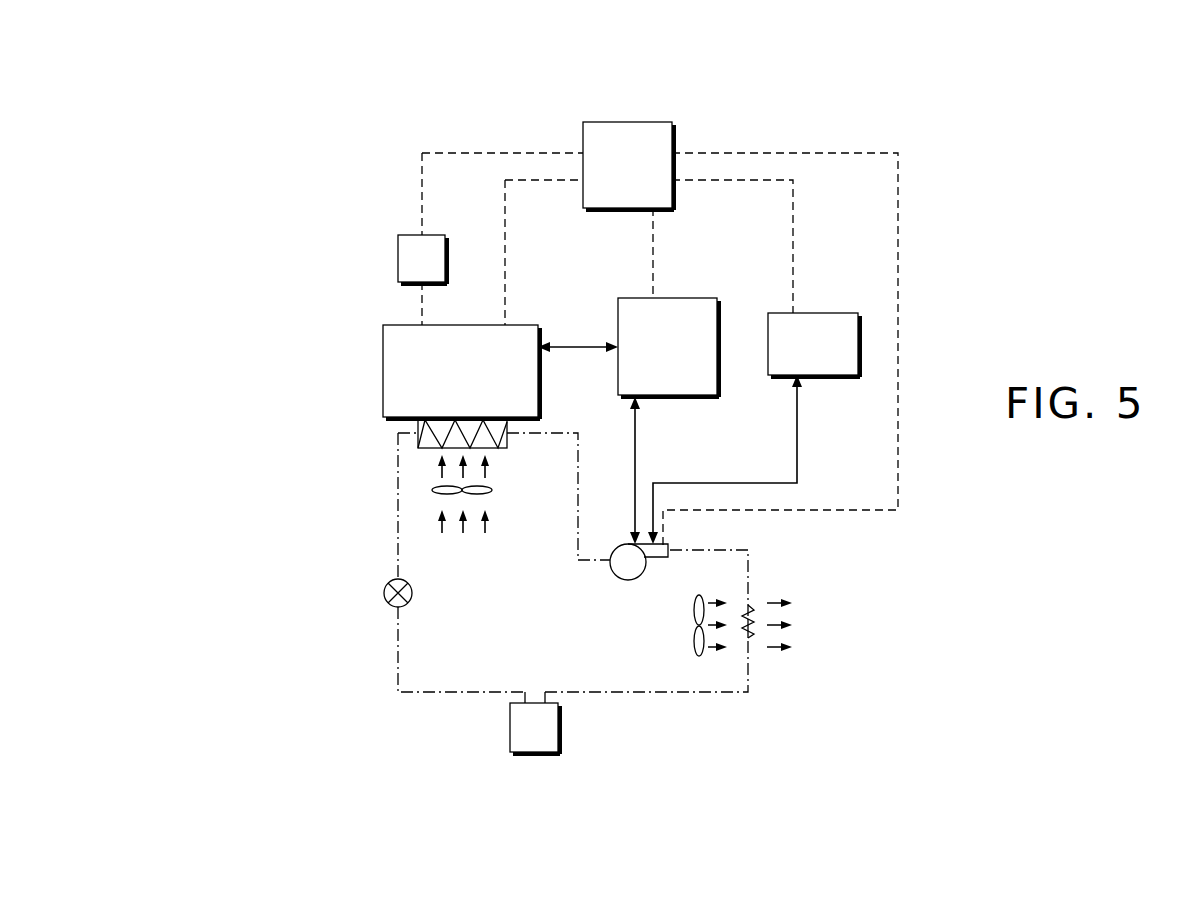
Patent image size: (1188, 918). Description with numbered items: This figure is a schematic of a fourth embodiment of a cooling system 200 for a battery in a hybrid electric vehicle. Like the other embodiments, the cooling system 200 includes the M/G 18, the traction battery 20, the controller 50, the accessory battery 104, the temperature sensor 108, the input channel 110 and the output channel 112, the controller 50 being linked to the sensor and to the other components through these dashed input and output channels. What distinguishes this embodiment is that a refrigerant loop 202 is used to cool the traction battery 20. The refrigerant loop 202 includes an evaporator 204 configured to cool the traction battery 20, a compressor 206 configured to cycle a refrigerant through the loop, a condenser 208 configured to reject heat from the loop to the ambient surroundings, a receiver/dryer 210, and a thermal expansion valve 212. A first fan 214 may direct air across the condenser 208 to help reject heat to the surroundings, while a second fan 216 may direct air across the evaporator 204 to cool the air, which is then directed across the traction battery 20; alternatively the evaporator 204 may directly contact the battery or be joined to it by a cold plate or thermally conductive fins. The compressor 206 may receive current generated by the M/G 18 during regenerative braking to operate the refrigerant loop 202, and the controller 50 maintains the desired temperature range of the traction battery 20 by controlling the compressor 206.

The cooling system 200 is at (318, 90).
The input channel 110 is at (457, 150).
The output channel 112 is at (650, 255).
The controller 50 is at (628, 122).
The temperature sensor 108 is at (398, 258).
The traction battery 20 is at (382, 370).
The M/G 18 is at (690, 298).
The accessory battery 104 is at (825, 313).
The refrigerant loop 202 is at (640, 695).
The evaporator 204 is at (500, 450).
The second fan 216 is at (487, 495).
The compressor 206 is at (628, 582).
The first fan 214 is at (700, 594).
The condenser 208 is at (752, 607).
The thermal expansion valve 212 is at (384, 592).
The receiver/dryer 210 is at (535, 755).